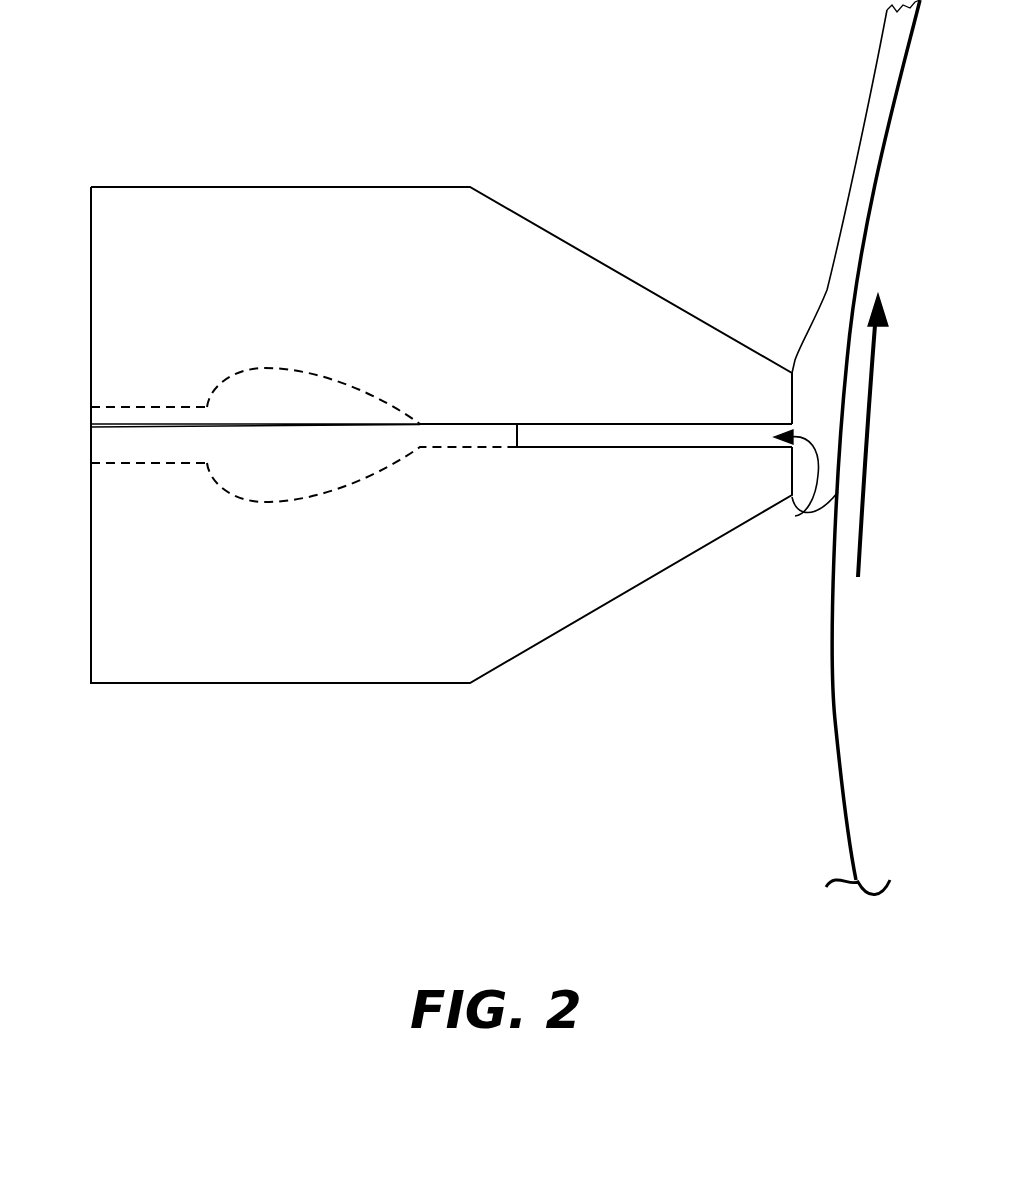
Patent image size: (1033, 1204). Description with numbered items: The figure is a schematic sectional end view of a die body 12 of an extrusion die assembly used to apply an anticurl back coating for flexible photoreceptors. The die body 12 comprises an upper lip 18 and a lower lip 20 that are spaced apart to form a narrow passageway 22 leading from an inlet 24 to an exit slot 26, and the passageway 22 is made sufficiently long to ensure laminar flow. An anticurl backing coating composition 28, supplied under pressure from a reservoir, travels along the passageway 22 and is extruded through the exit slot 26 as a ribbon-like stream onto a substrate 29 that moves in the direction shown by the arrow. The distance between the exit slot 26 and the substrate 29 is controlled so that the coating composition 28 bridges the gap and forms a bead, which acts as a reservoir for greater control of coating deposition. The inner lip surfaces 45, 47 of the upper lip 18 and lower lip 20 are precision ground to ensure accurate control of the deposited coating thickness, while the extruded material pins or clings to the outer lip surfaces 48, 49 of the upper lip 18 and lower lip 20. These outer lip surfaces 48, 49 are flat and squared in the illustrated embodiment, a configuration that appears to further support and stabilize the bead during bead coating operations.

The die body 12 is at (405, 163).
The upper lip 18 is at (219, 187).
The lower lip 20 is at (210, 684).
The passageway 22 is at (452, 437).
The inlet 24 is at (112, 433).
The exit slot 26 is at (803, 487).
The anticurl backing coating composition 28 is at (825, 290).
The substrate 29 is at (832, 712).
The inner lip surface 45 is at (613, 423).
The inner lip surface 47 is at (613, 448).
The outer lip surface 48 is at (790, 392).
The outer lip surface 49 is at (790, 470).